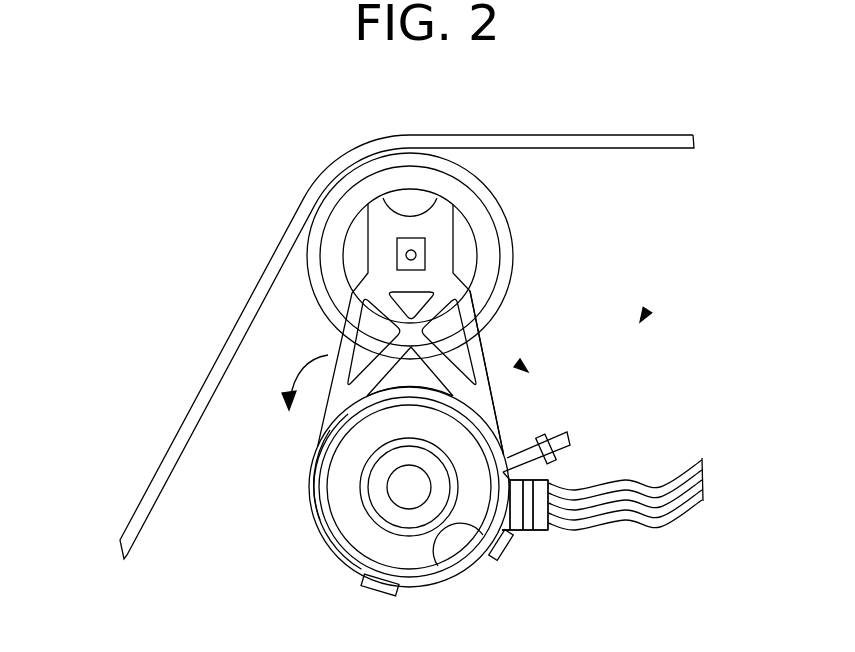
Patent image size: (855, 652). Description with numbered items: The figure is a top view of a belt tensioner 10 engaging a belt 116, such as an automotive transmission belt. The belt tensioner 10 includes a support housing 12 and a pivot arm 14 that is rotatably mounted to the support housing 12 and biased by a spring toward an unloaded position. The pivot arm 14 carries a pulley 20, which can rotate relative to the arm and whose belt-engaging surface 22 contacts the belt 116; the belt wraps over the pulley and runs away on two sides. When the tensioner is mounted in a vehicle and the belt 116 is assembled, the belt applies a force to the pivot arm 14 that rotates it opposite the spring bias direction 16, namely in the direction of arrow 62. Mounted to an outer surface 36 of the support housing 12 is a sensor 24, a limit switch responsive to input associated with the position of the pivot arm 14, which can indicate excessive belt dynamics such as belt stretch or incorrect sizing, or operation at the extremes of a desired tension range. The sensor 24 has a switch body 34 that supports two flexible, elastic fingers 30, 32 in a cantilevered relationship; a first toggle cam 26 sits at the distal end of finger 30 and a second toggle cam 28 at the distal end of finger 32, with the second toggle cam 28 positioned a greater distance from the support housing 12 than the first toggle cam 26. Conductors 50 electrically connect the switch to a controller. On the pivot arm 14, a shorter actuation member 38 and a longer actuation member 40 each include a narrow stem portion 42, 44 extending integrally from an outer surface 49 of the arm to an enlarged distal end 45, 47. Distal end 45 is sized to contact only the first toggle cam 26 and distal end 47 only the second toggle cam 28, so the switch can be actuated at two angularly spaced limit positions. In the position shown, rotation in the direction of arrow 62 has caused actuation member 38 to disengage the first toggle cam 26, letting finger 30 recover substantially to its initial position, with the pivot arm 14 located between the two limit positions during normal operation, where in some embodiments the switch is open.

The belt tensioner 10 is at (645, 315).
The support housing 12 is at (312, 508).
The pivot arm 14 is at (480, 402).
The bias direction 16 is at (312, 353).
The pulley 20 is at (497, 197).
The belt-engaging surface 22 is at (518, 245).
The sensor 24 is at (535, 532).
The first toggle cam 26 is at (552, 478).
The second toggle cam 28 is at (548, 526).
The flexible, elastic finger 30 is at (523, 531).
The flexible, elastic finger 32 is at (563, 482).
The switch body 34 is at (540, 537).
The outer surface 36 is at (400, 591).
The actuation member 38 is at (518, 533).
The actuation member 40 is at (553, 441).
The narrow stem portion 42 is at (432, 573).
The narrow stem portion 44 is at (521, 452).
The enlarged distal end 45 is at (493, 558).
The enlarged distal end 47 is at (528, 464).
The outer surface 49 is at (312, 463).
The conductors 50 is at (673, 462).
The arrow 62 is at (520, 364).
The belt 116 is at (658, 133).